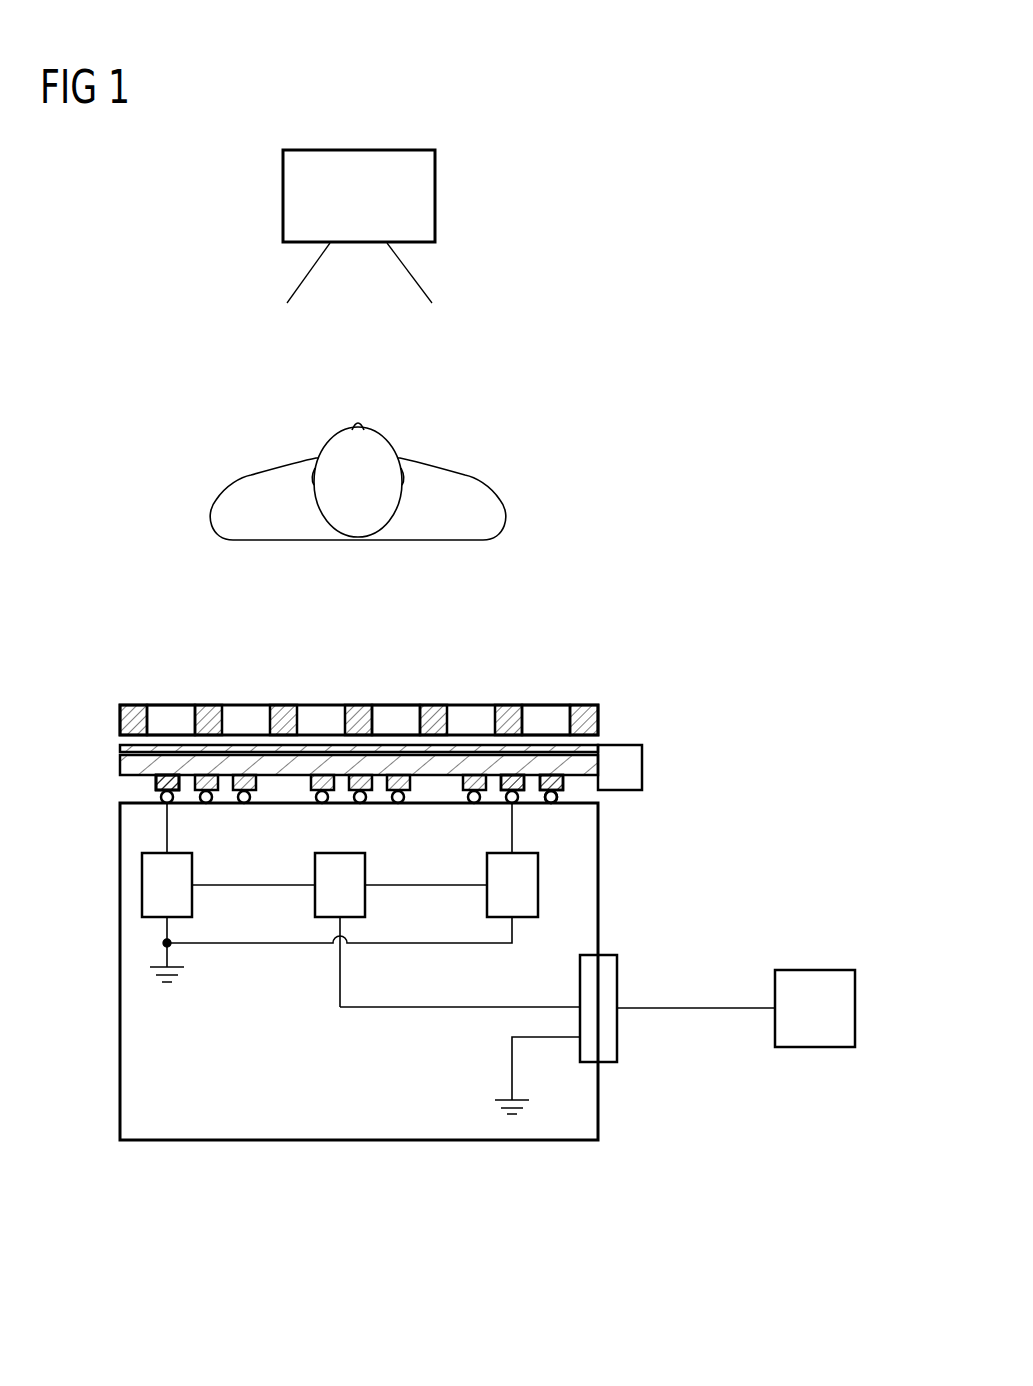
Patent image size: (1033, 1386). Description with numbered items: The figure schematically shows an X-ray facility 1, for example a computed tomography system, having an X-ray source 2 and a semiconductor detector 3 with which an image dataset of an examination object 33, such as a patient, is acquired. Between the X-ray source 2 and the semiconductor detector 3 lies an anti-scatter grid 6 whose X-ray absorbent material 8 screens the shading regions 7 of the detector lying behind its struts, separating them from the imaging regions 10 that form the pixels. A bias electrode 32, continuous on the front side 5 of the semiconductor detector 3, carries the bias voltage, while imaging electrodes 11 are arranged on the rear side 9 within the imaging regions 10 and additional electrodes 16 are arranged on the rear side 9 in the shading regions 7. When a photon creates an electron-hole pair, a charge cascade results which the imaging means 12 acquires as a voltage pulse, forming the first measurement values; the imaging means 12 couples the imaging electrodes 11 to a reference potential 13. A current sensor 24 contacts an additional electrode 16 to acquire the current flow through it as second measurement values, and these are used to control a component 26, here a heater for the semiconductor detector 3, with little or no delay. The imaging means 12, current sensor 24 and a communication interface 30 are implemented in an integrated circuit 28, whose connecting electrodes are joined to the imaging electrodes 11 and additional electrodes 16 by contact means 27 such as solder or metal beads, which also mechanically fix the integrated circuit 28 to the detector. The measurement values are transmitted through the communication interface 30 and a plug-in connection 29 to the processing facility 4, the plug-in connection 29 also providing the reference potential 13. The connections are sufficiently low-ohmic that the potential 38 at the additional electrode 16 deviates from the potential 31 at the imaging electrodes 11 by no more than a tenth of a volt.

The X-ray facility 1 is at (667, 305).
The X-ray source 2 is at (436, 195).
The examination object 33 is at (268, 430).
The anti-scatter grid 6 is at (330, 667).
The shading regions 7 is at (208, 733).
The X-ray absorbent material 8 is at (125, 718).
The imaging regions 10 is at (384, 735).
The front side 5 is at (546, 735).
The additional electrodes 16 is at (513, 778).
The potential at the additional electrode 38 is at (512, 782).
The bias electrode 32 is at (125, 750).
The semiconductor detector 3 is at (125, 762).
The rear side 9 is at (128, 778).
The imaging electrodes 11 is at (177, 784).
The potential at the imaging electrodes 31 is at (167, 782).
The component 26 is at (643, 762).
The contact means 27 is at (574, 791).
The integrated circuit 28 is at (403, 1145).
The imaging means 12 is at (142, 880).
The reference potential 13 is at (160, 966).
The communication interface 30 is at (365, 870).
The current sensor 24 is at (538, 885).
The plug-in connection 29 is at (609, 1068).
The processing facility 4 is at (813, 970).